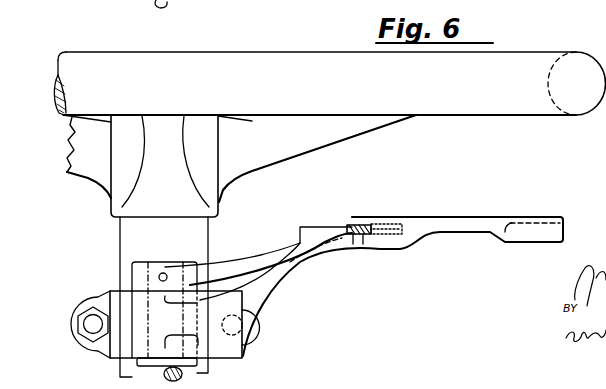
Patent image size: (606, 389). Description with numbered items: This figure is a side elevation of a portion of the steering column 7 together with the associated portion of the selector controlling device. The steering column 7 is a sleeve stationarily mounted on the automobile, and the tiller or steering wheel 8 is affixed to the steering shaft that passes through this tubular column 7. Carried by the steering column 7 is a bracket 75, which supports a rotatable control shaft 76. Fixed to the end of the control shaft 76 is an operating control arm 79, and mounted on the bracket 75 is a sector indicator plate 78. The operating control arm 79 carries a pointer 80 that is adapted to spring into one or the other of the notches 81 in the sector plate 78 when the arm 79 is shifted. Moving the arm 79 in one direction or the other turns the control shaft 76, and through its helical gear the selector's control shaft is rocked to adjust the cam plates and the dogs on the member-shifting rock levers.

The steering column 7 is at (122, 243).
The steering wheel 8 is at (447, 117).
The bracket 75 is at (115, 300).
The control shaft 76 is at (214, 371).
The sector indicator plate 78 is at (306, 226).
The operating control arm 79 is at (261, 267).
The pointer 80 is at (359, 224).
The notches 81 is at (365, 237).